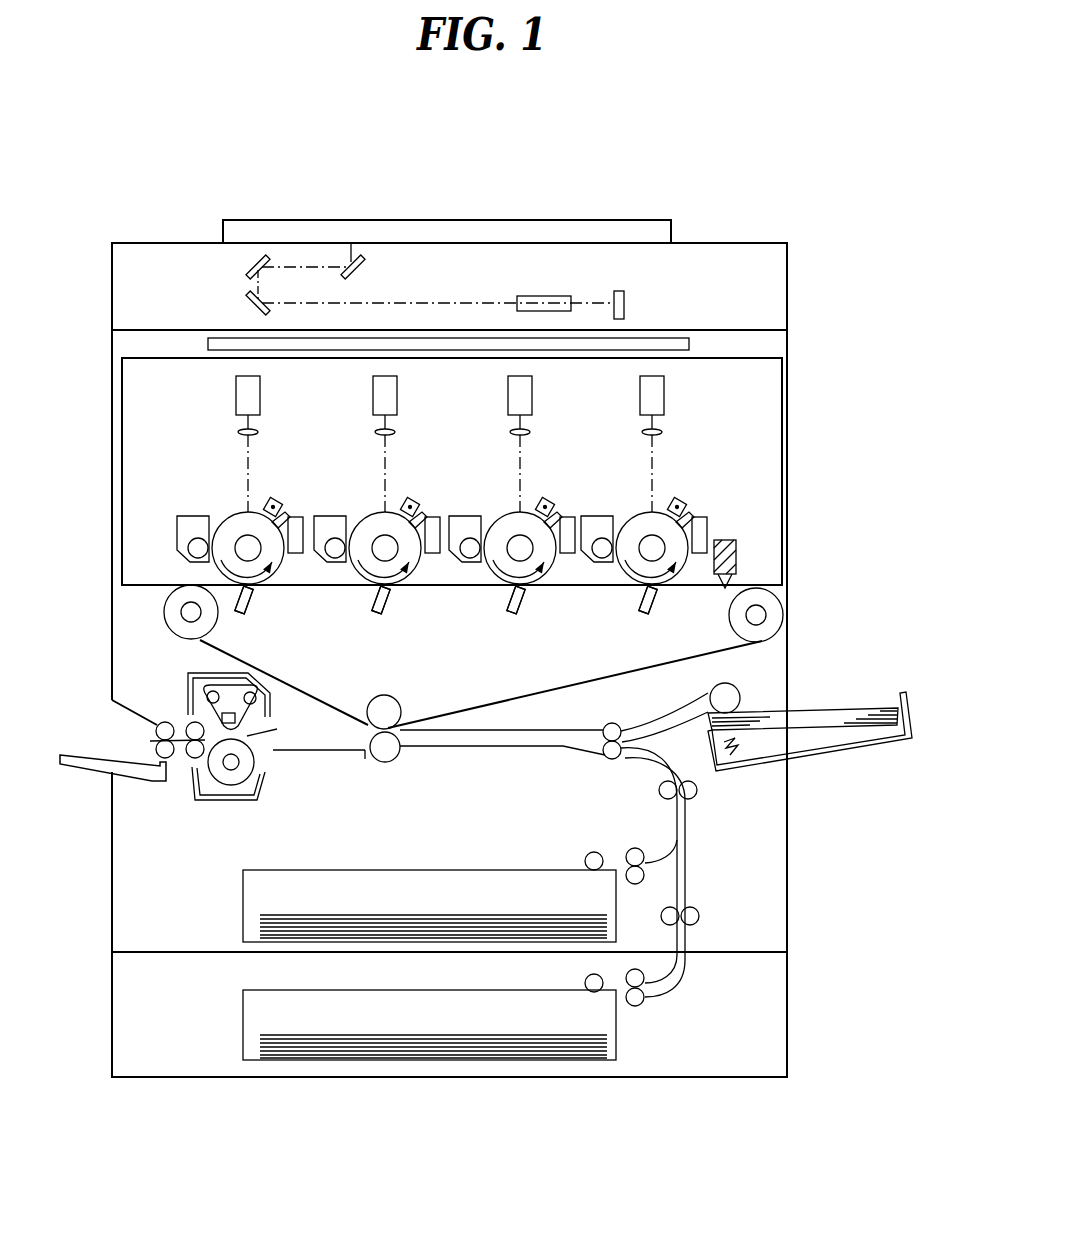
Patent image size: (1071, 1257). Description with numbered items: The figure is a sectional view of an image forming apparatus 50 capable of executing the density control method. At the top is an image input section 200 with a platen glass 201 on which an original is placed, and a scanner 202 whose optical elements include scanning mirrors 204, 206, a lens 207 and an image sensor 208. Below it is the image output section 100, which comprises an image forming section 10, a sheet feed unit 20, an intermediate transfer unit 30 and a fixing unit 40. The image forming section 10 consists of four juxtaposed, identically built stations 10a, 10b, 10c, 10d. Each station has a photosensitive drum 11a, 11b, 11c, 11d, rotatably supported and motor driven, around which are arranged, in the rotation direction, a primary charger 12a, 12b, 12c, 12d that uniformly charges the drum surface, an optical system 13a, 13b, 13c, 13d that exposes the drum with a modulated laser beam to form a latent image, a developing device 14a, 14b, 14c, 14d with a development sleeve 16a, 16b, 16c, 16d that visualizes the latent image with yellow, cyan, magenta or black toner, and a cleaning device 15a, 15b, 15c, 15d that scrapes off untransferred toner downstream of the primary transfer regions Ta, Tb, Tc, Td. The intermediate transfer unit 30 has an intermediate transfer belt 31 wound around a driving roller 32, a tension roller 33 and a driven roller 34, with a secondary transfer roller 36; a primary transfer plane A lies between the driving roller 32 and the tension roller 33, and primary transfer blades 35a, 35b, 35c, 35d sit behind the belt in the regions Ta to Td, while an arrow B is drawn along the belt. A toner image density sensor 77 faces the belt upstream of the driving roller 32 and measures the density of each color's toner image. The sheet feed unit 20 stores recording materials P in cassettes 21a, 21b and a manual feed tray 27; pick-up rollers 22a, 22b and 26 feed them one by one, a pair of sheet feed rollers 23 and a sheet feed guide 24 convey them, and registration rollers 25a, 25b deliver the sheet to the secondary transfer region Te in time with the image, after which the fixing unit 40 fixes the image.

The image forming apparatus 50 is at (481, 608).
The image input section 200 is at (551, 310).
The platen glass 201 is at (592, 225).
The scanner 202 is at (373, 273).
The scanning mirror 204 is at (363, 266).
The scanning mirror 206 is at (252, 258).
The lens 207 is at (540, 294).
The image sensor 208 is at (625, 301).
The image forming section 10 is at (490, 471).
The image output section 100 is at (508, 471).
The station 10a is at (699, 519).
The station 10b is at (522, 519).
The station 10c is at (386, 519).
The station 10d is at (236, 507).
The photosensitive drum 11a is at (640, 526).
The photosensitive drum 11b is at (512, 523).
The photosensitive drum 11c is at (375, 521).
The photosensitive drum 11d is at (240, 518).
The primary charger 12a is at (711, 492).
The primary charger 12b is at (560, 485).
The primary charger 12c is at (431, 485).
The primary charger 12d is at (290, 483).
The optical system 13a is at (691, 436).
The optical system 13b is at (559, 436).
The optical system 13c is at (423, 436).
The optical system 13d is at (287, 436).
The developing device 14a is at (608, 583).
The developing device 14b is at (475, 583).
The developing device 14c is at (337, 583).
The developing device 14d is at (169, 505).
The cleaning device 15a is at (757, 530).
The cleaning device 15b is at (565, 569).
The cleaning device 15c is at (429, 569).
The cleaning device 15d is at (293, 569).
The development sleeve 16a is at (586, 524).
The development sleeve 16b is at (455, 520).
The development sleeve 16c is at (320, 519).
The development sleeve 16d is at (195, 518).
The primary transfer blade 35a is at (673, 618).
The primary transfer blade 35b is at (547, 620).
The primary transfer blade 35c is at (411, 620).
The primary transfer blade 35d is at (275, 620).
The primary transfer region Ta is at (629, 632).
The primary transfer region Tb is at (508, 632).
The primary transfer region Tc is at (372, 632).
The primary transfer region Td is at (241, 620).
The secondary transfer region Te is at (370, 733).
The toner image density sensor 77 is at (738, 555).
The intermediate transfer unit 30 is at (489, 657).
The intermediate transfer belt 31 is at (476, 656).
The driving roller 32 is at (784, 615).
The tension roller 33 is at (180, 636).
The driven roller 34 is at (392, 712).
The secondary transfer roller 36 is at (375, 760).
The primary transfer plane A is at (711, 619).
The belt moving direction B is at (318, 689).
The fixing unit 40 is at (212, 784).
The sheet feed unit 20 is at (619, 864).
The cassette 21a is at (393, 870).
The cassette 21b is at (348, 990).
The pick-up roller 22a is at (586, 855).
The pick-up roller 22b is at (586, 983).
The sheet feed rollers 23 is at (640, 848).
The sheet feed guide 24 is at (698, 907).
The registration roller 25a is at (620, 728).
The registration roller 25b is at (605, 760).
The pick-up roller 26 is at (740, 690).
The manual feed tray 27 is at (810, 756).
The recording material P is at (270, 915).